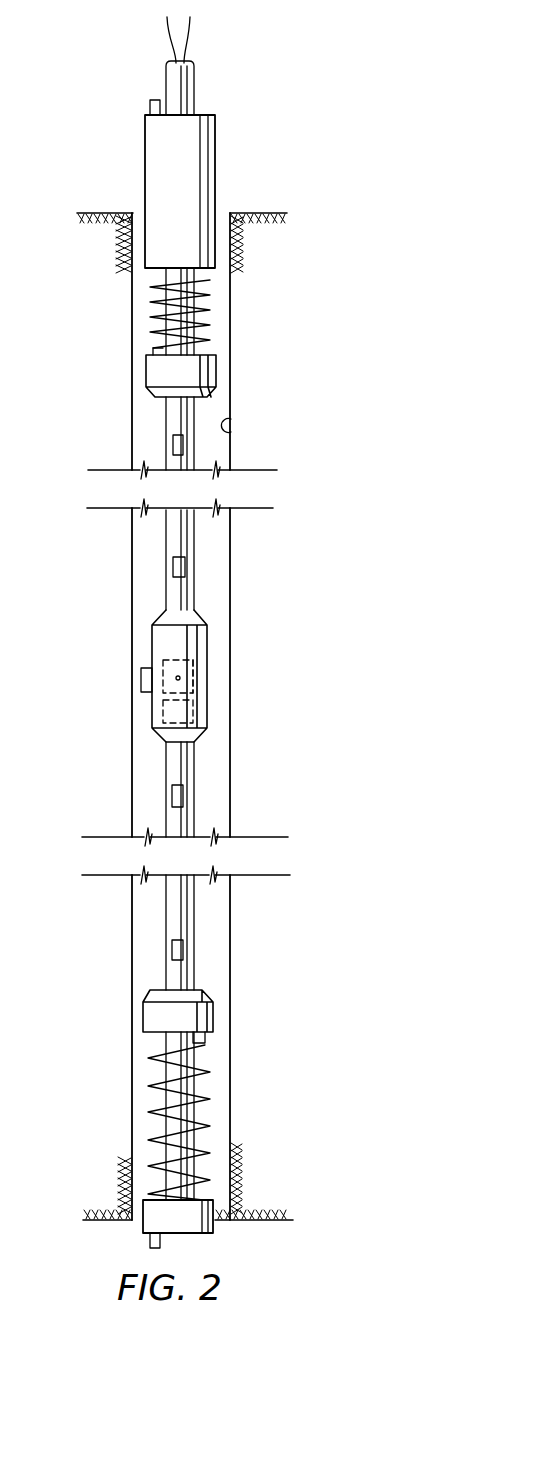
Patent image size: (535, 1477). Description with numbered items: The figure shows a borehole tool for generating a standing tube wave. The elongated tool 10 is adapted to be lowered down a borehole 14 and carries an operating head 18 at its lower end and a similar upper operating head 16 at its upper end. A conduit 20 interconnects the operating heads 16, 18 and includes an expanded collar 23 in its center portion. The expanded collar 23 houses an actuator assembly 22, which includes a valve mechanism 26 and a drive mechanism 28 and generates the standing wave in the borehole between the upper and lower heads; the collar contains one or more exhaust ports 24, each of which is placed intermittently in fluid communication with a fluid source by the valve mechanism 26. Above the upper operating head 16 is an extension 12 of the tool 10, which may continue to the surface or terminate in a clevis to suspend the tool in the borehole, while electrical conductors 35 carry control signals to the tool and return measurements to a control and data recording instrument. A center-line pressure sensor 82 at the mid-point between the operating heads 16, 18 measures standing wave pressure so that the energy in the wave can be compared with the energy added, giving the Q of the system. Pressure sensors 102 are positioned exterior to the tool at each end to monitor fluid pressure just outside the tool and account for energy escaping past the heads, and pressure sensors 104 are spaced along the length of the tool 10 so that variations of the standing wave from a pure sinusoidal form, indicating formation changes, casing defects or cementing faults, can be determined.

The elongated tool 10 is at (197, 562).
The extension 12 is at (196, 85).
The borehole 14 is at (233, 425).
The upper operating head 16 is at (217, 368).
The lower operating head 18 is at (213, 1007).
The conduit 20 is at (194, 920).
The actuator assembly 22 is at (207, 727).
The expanded collar 23 is at (207, 628).
The exhaust ports 24 is at (205, 680).
The valve mechanism 26 is at (193, 690).
The drive mechanism 28 is at (195, 712).
The electrical conductors 35 is at (187, 42).
The center-line pressure sensor 82 is at (141, 680).
The pressure sensors 102 is at (150, 1242).
The pressure sensors 104 is at (172, 949).